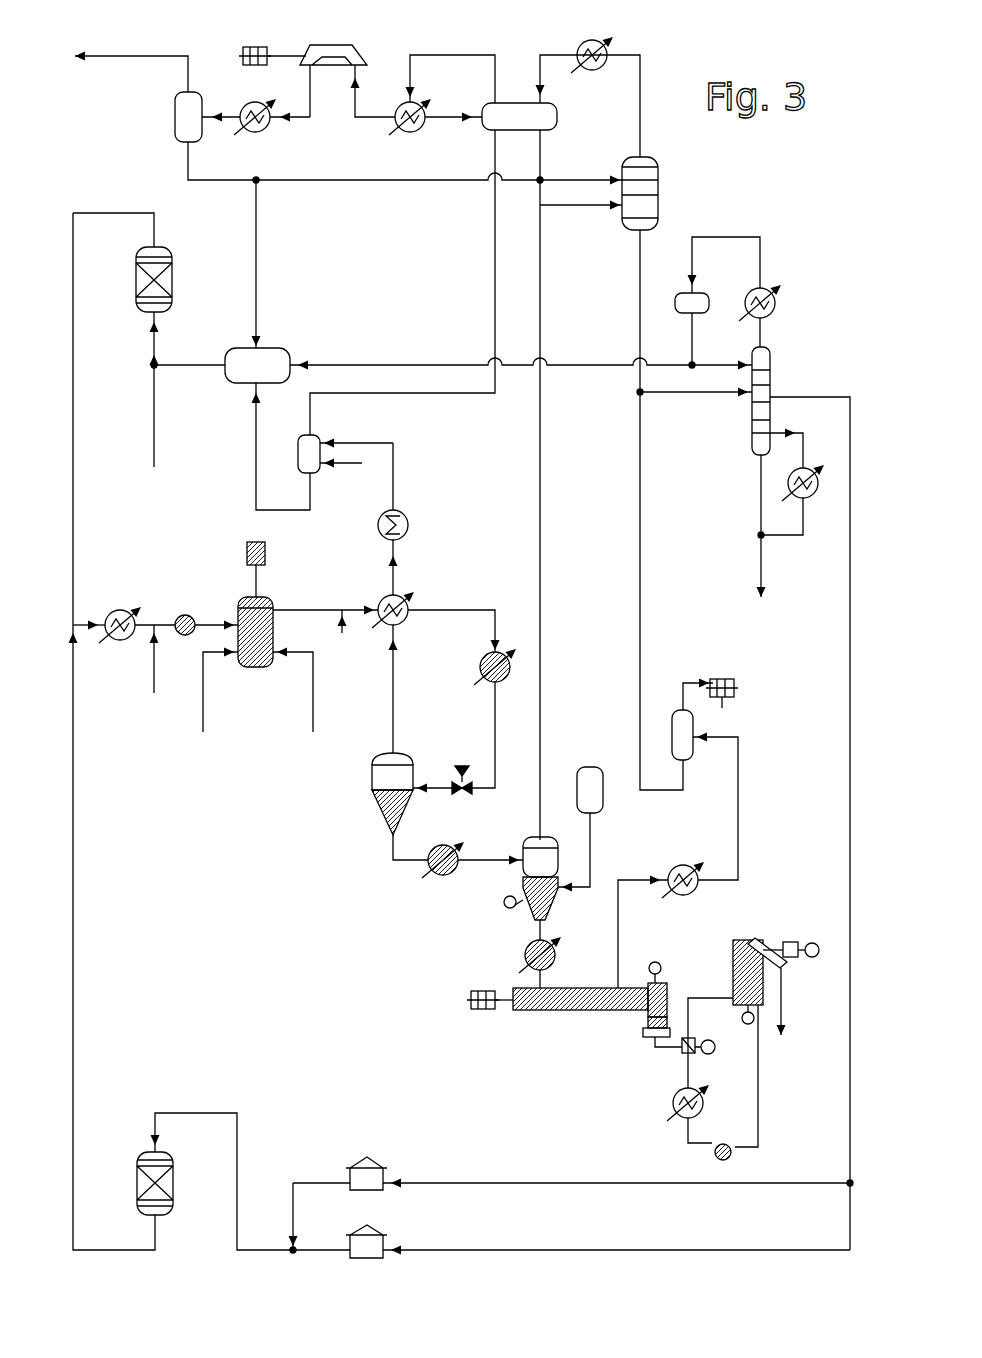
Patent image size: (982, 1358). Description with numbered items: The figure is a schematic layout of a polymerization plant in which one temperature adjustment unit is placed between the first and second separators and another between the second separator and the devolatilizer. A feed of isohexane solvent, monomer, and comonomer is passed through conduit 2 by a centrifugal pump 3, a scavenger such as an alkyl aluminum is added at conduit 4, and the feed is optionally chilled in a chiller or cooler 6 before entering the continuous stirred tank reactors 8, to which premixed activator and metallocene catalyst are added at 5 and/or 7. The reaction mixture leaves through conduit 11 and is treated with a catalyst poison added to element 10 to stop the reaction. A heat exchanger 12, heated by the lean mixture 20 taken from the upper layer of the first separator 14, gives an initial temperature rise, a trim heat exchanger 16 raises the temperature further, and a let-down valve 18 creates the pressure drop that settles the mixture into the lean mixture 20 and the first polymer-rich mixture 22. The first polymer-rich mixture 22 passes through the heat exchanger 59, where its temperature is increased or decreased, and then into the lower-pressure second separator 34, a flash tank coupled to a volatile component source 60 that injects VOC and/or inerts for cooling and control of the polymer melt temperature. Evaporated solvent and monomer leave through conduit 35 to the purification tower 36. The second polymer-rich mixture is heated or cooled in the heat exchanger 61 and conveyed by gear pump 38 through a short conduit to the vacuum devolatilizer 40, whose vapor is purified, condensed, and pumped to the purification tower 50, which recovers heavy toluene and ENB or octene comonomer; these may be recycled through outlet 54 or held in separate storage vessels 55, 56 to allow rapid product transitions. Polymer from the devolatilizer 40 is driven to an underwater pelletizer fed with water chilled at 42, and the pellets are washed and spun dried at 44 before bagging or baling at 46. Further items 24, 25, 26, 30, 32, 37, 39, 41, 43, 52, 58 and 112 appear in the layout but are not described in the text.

The conduit 2 is at (73, 513).
The centrifugal pump 3 is at (185, 612).
The conduit 4 is at (153, 670).
The catalyst addition point 5 is at (203, 715).
The chiller or cooler 6 is at (122, 603).
The catalyst addition point 7 is at (313, 715).
The continuous stirred tank reactor 8 is at (275, 630).
The element 10 is at (343, 640).
The conduit 11 is at (318, 607).
The heat exchanger 12 is at (402, 597).
The first separator 14 is at (378, 753).
The trim heat exchanger 16 is at (480, 665).
The let-down valve 18 is at (462, 760).
The lean mixture 20 is at (370, 773).
The first polymer-rich mixture 22 is at (377, 813).
The compressor 24 is at (410, 525).
The inlet stream 25 is at (343, 467).
The vessel 26 is at (297, 458).
The line 30 is at (157, 445).
The reactor 32 is at (173, 277).
The second separator 34 is at (530, 837).
The conduit 35 is at (542, 523).
The purification tower 36 is at (660, 190).
The heat exchanger 37 is at (563, 50).
The gear pump 38 is at (510, 908).
The separator drum 39 is at (560, 117).
The vacuum devolatilizer 40 is at (572, 1012).
The separator drum 41 is at (270, 345).
The water chiller 42 is at (673, 1102).
The line 43 is at (192, 367).
The washer and spin dryer 44 is at (730, 970).
The bagging or baling station 46 is at (783, 998).
The purification tower 50 is at (772, 362).
The product stream 52 is at (758, 567).
The outlet 54 is at (850, 827).
The storage vessel 55 is at (377, 1162).
The storage vessel 56 is at (377, 1230).
The reactor 58 is at (120, 1247).
The heat exchanger 59 is at (445, 882).
The volatile component source 60 is at (588, 760).
The heat exchanger 61 is at (548, 963).
The overhead stream 112 is at (133, 53).